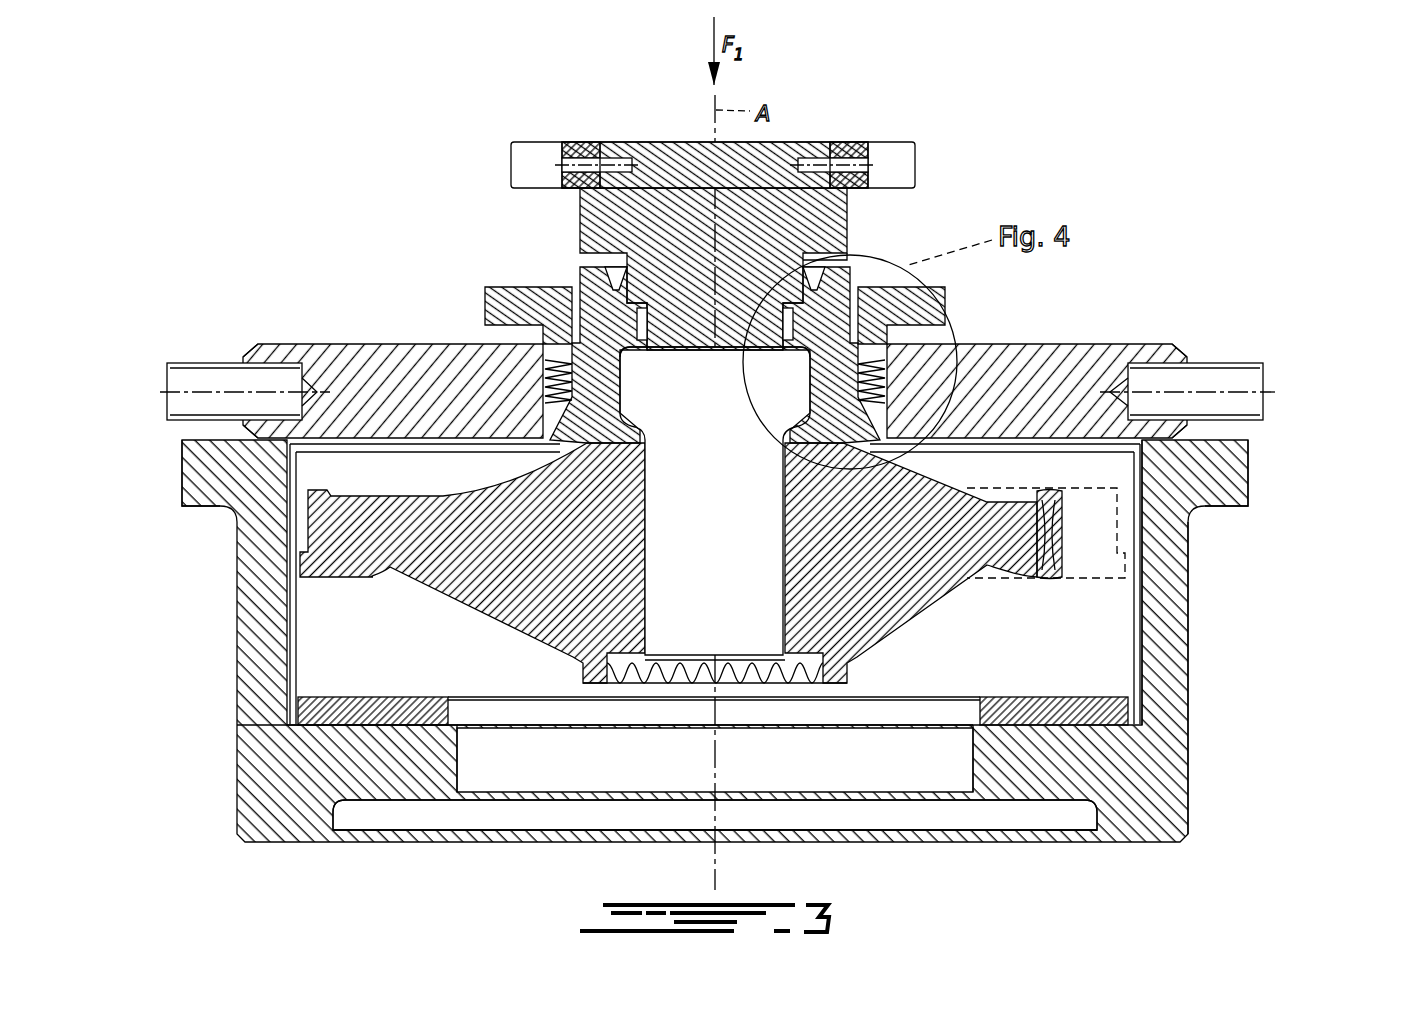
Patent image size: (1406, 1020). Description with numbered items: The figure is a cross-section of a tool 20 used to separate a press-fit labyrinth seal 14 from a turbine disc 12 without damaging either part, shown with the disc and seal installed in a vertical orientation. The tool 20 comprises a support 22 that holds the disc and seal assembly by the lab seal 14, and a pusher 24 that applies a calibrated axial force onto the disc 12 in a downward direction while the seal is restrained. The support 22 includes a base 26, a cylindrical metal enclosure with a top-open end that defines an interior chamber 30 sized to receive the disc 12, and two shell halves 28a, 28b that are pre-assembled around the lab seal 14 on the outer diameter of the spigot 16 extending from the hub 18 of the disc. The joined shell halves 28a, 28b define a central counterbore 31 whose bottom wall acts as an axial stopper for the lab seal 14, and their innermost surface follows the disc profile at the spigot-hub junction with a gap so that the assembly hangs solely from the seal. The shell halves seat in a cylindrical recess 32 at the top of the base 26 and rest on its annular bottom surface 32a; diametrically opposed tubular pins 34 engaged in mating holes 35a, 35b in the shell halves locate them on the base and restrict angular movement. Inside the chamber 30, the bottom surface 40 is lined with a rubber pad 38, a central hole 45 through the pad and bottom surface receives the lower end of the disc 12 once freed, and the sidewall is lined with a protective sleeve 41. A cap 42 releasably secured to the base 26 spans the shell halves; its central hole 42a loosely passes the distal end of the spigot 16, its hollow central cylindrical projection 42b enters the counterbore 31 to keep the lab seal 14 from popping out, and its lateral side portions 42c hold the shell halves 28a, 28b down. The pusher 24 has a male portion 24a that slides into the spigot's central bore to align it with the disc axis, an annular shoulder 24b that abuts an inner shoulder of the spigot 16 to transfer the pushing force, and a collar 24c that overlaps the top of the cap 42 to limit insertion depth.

The turbine disc 12 is at (423, 608).
The labyrinth seal 14 is at (543, 378).
The spigot 16 is at (580, 272).
The hub 18 is at (883, 603).
The tool 20 is at (1280, 150).
The support 22 is at (208, 613).
The pusher 24 is at (892, 114).
The male portion 24a is at (682, 357).
The annular shoulder 24b is at (635, 348).
The collar 24c is at (533, 165).
The base 26 is at (1177, 587).
The shell half 28a is at (1067, 345).
The shell half 28b is at (377, 343).
The interior chamber 30 is at (1100, 640).
The counterbore 31 is at (885, 358).
The cylindrical recess 32 is at (185, 440).
The annular bottom surface 32a is at (1226, 473).
The pins 34 is at (168, 368).
The mating hole 35a is at (1118, 382).
The mating hole 35b is at (313, 382).
The rubber pad 38 is at (428, 705).
The bottom surface 40 is at (340, 716).
The protective sleeve 41 is at (297, 610).
The cap 42 is at (523, 285).
The central hole 42a is at (850, 254).
The central cylindrical projection 42b is at (490, 295).
The lateral longitudinal side portions 42c is at (927, 300).
The central hole 45 is at (893, 765).